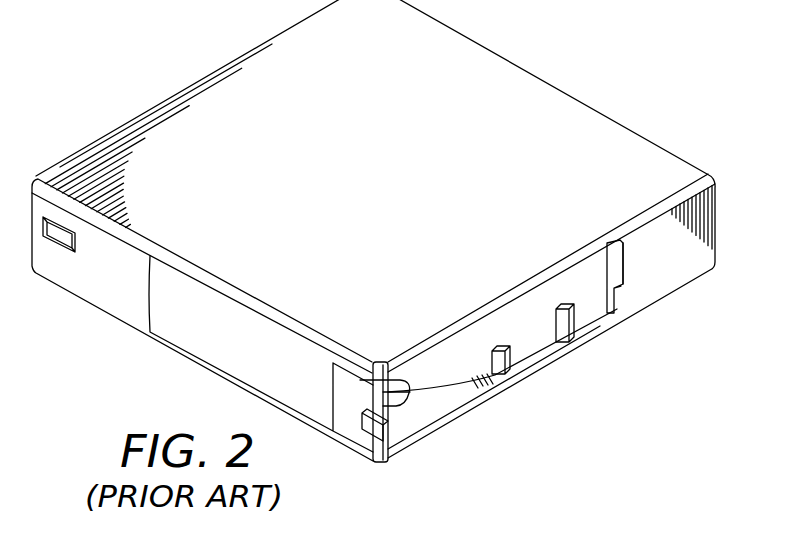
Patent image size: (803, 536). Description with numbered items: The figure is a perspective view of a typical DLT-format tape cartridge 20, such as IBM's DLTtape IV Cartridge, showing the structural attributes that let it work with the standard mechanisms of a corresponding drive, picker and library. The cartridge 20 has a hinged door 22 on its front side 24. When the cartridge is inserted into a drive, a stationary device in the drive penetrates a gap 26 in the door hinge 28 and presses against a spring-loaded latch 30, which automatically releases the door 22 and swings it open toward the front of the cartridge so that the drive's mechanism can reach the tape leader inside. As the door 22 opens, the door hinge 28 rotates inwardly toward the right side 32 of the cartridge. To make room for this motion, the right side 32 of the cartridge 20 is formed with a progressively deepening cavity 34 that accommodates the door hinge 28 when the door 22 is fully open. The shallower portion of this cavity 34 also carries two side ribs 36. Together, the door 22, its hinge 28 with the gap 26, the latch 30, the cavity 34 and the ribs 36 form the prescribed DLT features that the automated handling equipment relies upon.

The DLT format cartridge 20 is at (543, 77).
The hinged door 22 is at (221, 348).
The front side 24 is at (78, 289).
The gap 26 is at (390, 420).
The door hinge 28 is at (382, 464).
The spring-loaded latch 30 is at (402, 380).
The right side 32 is at (676, 284).
The progressively deepening cavity 34 is at (447, 397).
The side ribs 36 is at (507, 374).